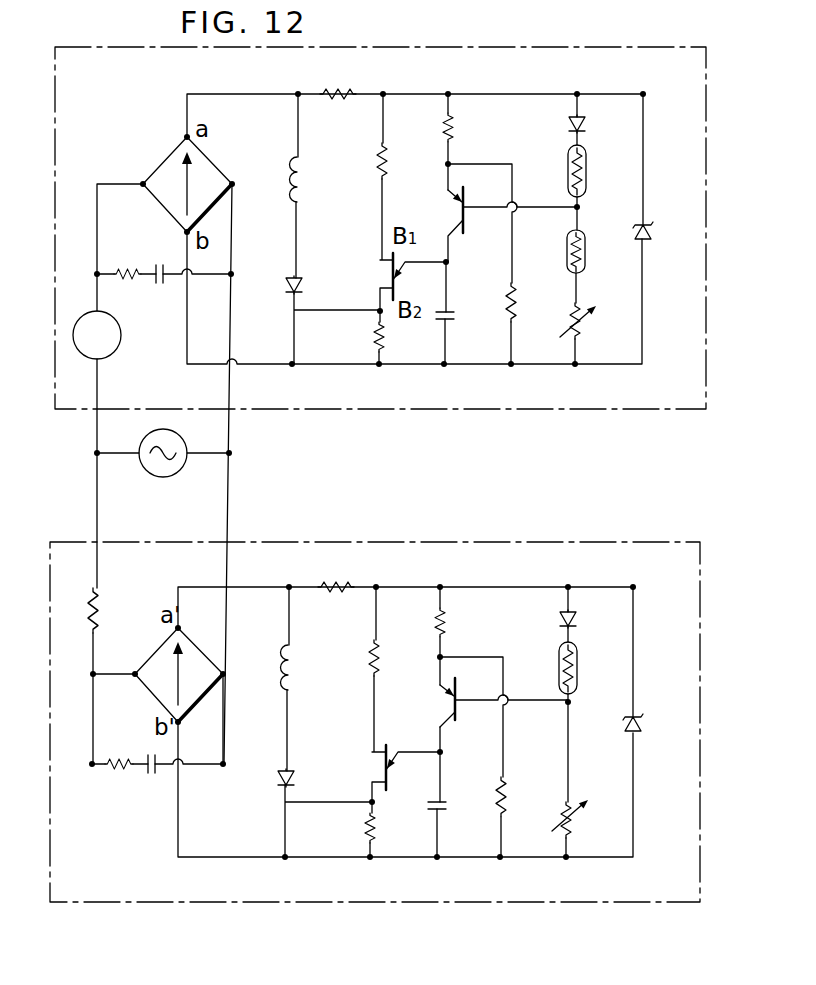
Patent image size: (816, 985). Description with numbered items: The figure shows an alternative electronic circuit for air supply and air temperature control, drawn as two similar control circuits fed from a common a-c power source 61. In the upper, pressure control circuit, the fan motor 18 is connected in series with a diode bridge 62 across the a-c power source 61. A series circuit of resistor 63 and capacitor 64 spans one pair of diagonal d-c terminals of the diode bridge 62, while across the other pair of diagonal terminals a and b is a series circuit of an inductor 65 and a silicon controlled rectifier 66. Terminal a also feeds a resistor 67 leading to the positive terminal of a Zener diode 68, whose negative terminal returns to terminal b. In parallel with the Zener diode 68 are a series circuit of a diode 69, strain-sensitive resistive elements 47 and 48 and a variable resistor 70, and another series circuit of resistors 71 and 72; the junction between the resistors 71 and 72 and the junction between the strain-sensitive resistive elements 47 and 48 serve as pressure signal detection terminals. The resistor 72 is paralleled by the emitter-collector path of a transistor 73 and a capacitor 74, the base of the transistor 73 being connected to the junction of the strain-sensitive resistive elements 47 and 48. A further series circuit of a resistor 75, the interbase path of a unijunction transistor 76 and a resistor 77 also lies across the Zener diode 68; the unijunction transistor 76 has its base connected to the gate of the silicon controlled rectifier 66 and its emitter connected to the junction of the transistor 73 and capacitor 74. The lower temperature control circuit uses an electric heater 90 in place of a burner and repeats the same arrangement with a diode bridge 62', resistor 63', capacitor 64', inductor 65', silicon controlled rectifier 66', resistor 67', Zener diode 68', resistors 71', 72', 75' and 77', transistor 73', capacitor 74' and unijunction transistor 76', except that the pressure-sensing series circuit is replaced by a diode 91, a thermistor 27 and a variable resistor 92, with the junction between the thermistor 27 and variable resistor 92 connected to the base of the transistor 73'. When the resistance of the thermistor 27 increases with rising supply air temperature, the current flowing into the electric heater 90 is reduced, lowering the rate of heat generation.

The fan motor 18 is at (80, 357).
The thermistor 27 is at (580, 672).
The strain-sensitive resistive element 47 is at (588, 178).
The strain-sensitive resistive element 48 is at (588, 262).
The a-c power source 61 is at (170, 478).
The diode bridge 62 is at (198, 184).
The diode bridge 62' is at (179, 662).
The resistor 63 is at (130, 297).
The resistor 63' is at (123, 782).
The capacitor 64 is at (164, 295).
The capacitor 64' is at (156, 793).
The inductor 65 is at (318, 179).
The inductor 65' is at (313, 667).
The silicon controlled rectifier 66 is at (311, 272).
The silicon controlled rectifier 66' is at (309, 760).
The resistor 67 is at (350, 78).
The resistor 67' is at (343, 571).
The Zener diode 68 is at (662, 237).
The Zener diode 68' is at (653, 728).
The diode 69 is at (582, 125).
The variable resistor 70 is at (584, 333).
The resistor 71 is at (469, 129).
The resistor 71' is at (466, 623).
The resistor 72 is at (532, 303).
The resistor 72' is at (527, 797).
The transistor 73 is at (480, 224).
The transistor 73' is at (473, 718).
The capacitor 74 is at (467, 319).
The capacitor 74' is at (462, 812).
The resistor 75 is at (404, 161).
The resistor 75' is at (401, 658).
The unijunction transistor 76 is at (396, 276).
The unijunction transistor 76' is at (394, 767).
The resistor 77 is at (402, 339).
The resistor 77' is at (398, 828).
The electric heater 90 is at (100, 612).
The diode 91 is at (578, 622).
The variable resistor 92 is at (576, 825).